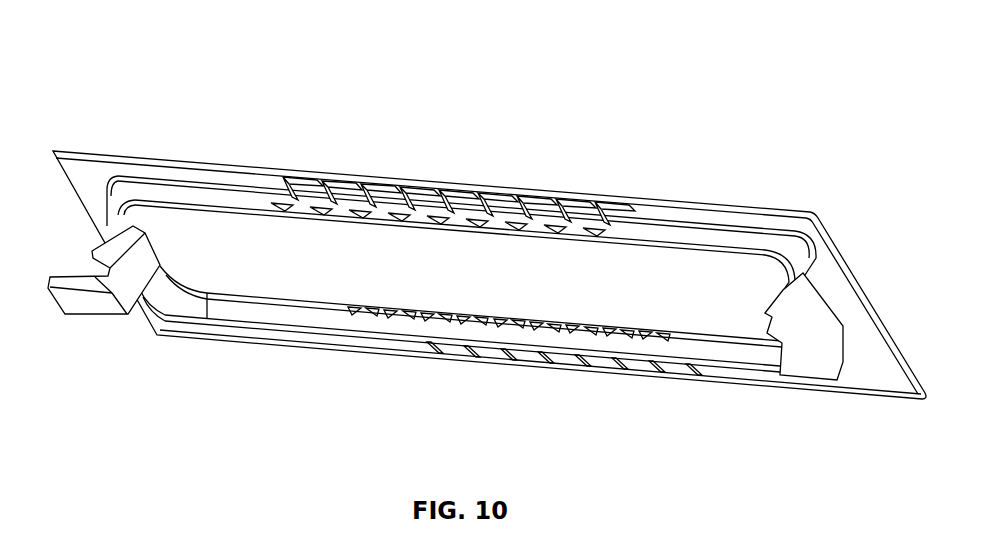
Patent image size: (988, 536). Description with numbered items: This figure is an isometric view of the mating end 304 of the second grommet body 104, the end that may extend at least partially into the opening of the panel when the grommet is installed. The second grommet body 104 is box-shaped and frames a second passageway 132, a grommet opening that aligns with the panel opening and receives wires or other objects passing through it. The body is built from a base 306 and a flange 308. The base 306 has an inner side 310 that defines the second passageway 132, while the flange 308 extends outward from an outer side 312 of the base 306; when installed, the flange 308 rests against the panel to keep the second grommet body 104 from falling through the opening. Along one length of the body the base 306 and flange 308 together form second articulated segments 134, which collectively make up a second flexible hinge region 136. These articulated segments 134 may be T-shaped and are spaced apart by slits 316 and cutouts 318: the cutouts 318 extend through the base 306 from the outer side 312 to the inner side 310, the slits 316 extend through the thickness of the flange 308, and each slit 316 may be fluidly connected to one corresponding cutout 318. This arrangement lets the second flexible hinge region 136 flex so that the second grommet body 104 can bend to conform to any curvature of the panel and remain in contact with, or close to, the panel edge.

The second grommet body 104 is at (469, 235).
The second passageway 132 is at (660, 259).
The second articulated segments 134 is at (524, 203).
The second flexible hinge region 136 is at (413, 175).
The mating end 304 is at (68, 200).
The base 306 is at (500, 278).
The flange 308 is at (86, 184).
The inner side 310 is at (302, 318).
The outer side 312 is at (232, 183).
The slits 316 is at (652, 378).
The cutouts 318 is at (593, 218).